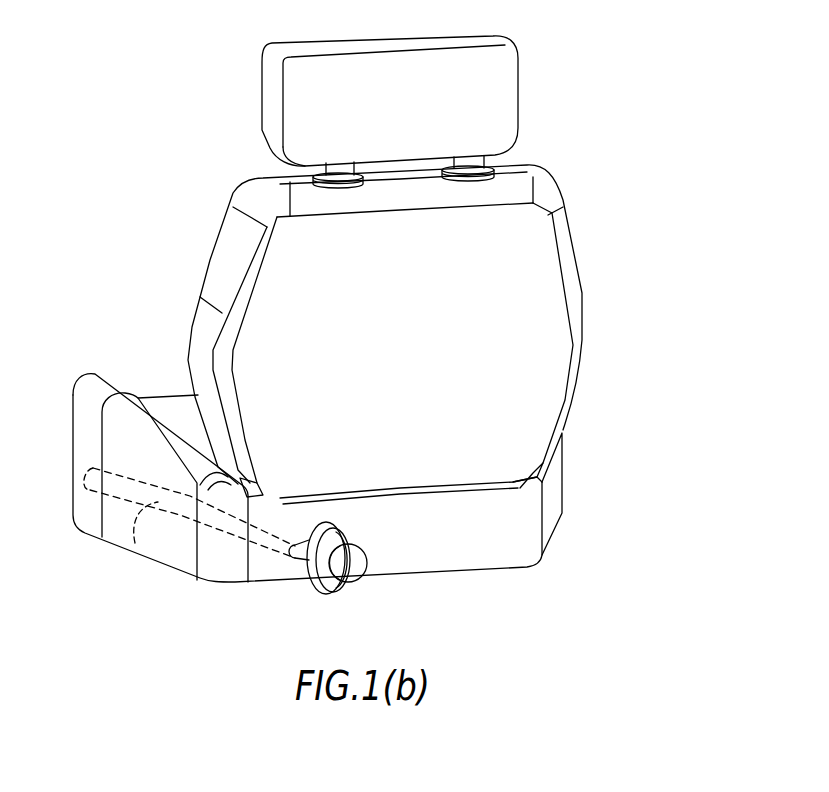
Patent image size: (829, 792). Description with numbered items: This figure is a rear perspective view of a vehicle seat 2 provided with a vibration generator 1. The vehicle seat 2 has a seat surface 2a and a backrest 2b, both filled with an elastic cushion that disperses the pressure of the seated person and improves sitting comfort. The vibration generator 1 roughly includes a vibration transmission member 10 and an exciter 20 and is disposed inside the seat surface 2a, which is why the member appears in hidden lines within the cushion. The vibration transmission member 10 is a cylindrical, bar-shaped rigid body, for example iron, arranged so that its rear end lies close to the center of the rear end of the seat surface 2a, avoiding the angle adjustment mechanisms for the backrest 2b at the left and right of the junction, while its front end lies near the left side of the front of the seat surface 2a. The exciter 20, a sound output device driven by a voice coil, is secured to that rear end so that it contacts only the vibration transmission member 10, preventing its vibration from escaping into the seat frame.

The vehicle seat 2 is at (386, 342).
The seat surface 2a is at (173, 398).
The backrest 2b is at (584, 317).
The vibration generator 1 is at (238, 558).
The vibration transmission member 10 is at (135, 543).
The exciter 20 is at (352, 574).